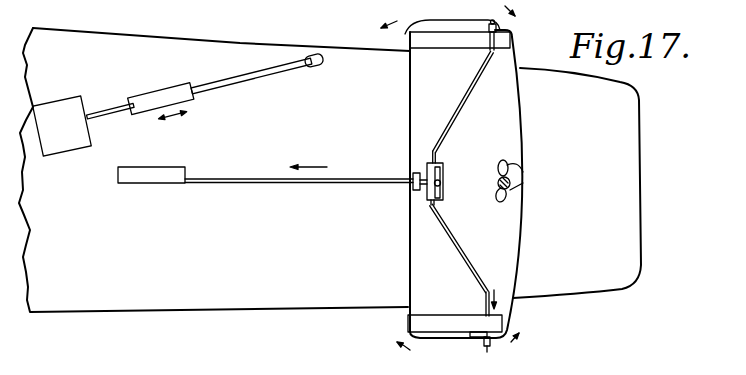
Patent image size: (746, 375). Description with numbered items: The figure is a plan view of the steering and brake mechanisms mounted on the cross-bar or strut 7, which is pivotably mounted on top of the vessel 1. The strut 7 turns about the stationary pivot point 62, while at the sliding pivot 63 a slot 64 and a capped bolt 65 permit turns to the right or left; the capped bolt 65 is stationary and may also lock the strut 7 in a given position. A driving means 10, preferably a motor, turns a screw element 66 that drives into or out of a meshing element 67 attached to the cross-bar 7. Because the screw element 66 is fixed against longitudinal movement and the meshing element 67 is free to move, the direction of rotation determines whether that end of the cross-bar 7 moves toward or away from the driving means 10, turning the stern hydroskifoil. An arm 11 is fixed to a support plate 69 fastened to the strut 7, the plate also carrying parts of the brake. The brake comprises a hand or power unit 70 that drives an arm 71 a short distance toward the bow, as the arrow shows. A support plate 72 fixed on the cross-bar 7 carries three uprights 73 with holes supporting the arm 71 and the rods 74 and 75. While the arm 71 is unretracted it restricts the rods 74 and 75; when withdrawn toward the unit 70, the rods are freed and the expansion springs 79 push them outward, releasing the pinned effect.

The boat hull / body 1 is at (139, 34).
The cross-bar or strut 7 is at (511, 243).
The driving means 10 is at (60, 103).
The arm 11 is at (230, 80).
The stationary pivot point 62 is at (430, 190).
The sliding pivot 63 is at (515, 186).
The slot 64 is at (498, 168).
The capped bolt 65 is at (498, 183).
The screw element 66 is at (108, 112).
The meshing element 67 is at (157, 97).
The support plate 69 is at (405, 33).
The hand or power unit 70 is at (153, 178).
The arm 71 is at (256, 184).
The support plate 72 is at (422, 173).
The uprights 73 is at (430, 204).
The rod 74 is at (465, 263).
The rod 75 is at (473, 97).
The expansion spring 79 is at (510, 27).